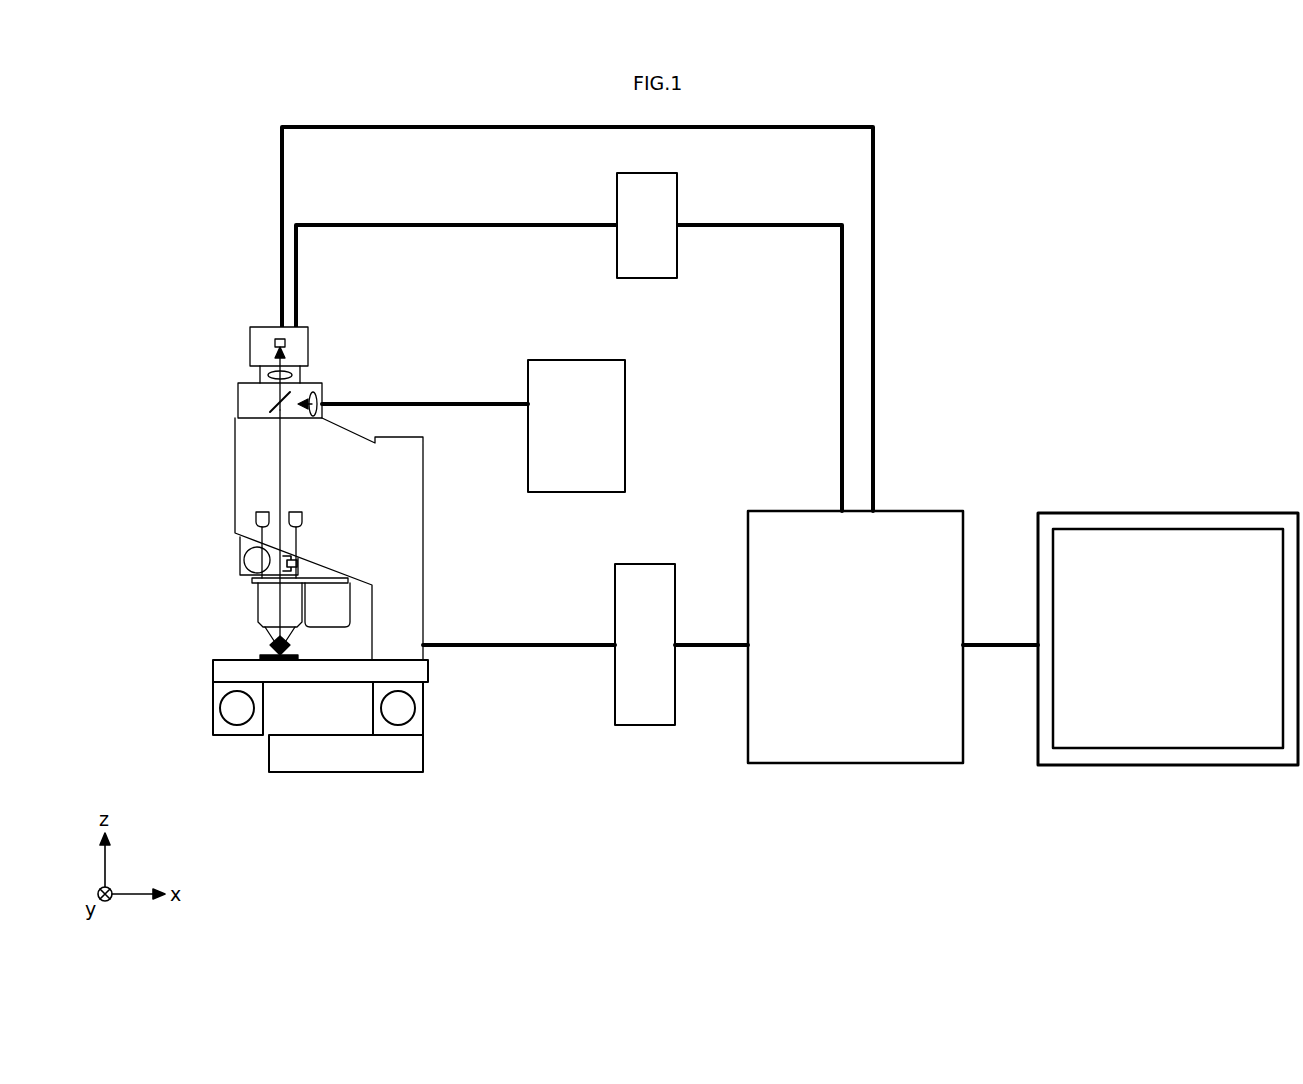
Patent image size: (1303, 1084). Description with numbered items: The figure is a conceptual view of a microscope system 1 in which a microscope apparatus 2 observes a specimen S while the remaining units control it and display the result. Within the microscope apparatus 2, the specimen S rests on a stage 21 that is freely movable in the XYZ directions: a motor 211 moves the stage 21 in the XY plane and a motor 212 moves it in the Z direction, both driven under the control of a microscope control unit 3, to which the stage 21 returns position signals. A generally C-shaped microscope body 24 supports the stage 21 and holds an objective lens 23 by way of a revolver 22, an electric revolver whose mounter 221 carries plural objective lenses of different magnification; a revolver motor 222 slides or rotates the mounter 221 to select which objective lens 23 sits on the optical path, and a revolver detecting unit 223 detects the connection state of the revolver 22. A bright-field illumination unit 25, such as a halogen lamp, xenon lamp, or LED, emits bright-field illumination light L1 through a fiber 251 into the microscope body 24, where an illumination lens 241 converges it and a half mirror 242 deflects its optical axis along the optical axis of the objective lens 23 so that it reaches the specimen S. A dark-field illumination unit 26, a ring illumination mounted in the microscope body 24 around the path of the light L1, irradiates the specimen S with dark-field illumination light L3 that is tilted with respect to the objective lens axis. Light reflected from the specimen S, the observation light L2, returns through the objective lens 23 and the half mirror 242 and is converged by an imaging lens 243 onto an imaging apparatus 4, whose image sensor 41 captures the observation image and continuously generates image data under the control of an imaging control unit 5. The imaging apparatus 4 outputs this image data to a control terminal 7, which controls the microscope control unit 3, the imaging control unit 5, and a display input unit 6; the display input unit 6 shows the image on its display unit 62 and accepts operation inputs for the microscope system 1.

The microscope system 1 is at (1152, 232).
The microscope apparatus 2 is at (347, 773).
The stage 21 is at (213, 670).
The motor 211 is at (238, 725).
The motor 212 is at (416, 708).
The revolver 22 is at (240, 545).
The mounter 221 is at (252, 580).
The revolver motor 222 is at (244, 560).
The revolver detecting unit 223 is at (297, 565).
The objective lens 23 is at (258, 620).
The microscope body 24 is at (423, 527).
The illumination lens 241 is at (318, 397).
The half mirror 242 is at (270, 405).
The imaging lens 243 is at (293, 375).
The bright-field illumination unit 25 is at (596, 360).
The fiber 251 is at (464, 404).
The dark-field illumination unit 26 is at (256, 519).
The microscope control unit 3 is at (646, 727).
The imaging apparatus 4 is at (303, 327).
The image sensor 41 is at (285, 343).
The imaging control unit 5 is at (656, 173).
The display input unit 6 is at (1158, 766).
The display unit 62 is at (1073, 750).
The control terminal 7 is at (852, 764).
The specimen S is at (270, 655).
The bright-field illumination light L1 is at (293, 398).
The observation light L2 is at (273, 360).
The dark-field illumination light L3 is at (258, 602).